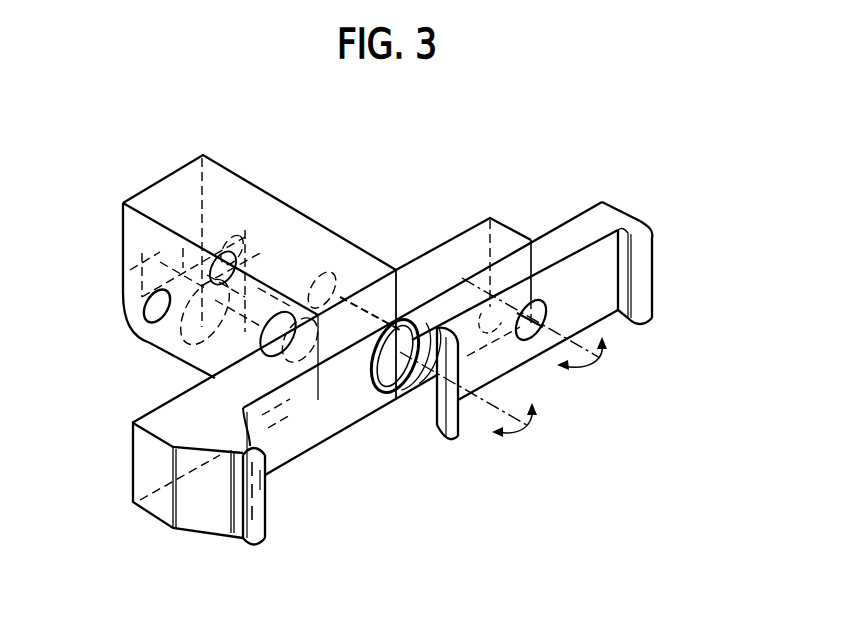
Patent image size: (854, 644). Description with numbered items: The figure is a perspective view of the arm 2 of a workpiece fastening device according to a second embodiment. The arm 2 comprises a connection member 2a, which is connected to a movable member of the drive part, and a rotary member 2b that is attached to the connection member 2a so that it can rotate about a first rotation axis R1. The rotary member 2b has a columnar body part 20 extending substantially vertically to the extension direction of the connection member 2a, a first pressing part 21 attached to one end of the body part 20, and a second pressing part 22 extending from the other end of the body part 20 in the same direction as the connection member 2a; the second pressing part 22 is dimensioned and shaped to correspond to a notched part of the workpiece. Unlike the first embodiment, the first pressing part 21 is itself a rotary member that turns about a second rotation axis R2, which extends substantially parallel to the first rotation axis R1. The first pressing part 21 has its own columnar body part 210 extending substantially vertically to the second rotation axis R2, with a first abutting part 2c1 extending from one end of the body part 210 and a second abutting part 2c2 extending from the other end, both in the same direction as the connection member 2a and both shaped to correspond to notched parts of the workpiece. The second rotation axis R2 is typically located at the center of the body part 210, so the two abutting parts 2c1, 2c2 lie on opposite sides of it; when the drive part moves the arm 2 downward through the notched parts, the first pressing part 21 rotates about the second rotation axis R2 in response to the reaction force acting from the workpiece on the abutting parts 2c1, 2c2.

The arm 2 is at (94, 155).
The connection member 2a is at (238, 216).
The rotary member 2b is at (469, 229).
The first pressing part 21 is at (572, 243).
The first abutting part 2c1 is at (643, 313).
The second abutting part 2c2 is at (446, 426).
The body part 20 is at (363, 416).
The second pressing part 22 is at (266, 531).
The body part 210 is at (540, 348).
The first rotation axis R1 is at (480, 409).
The second rotation axis R2 is at (592, 321).